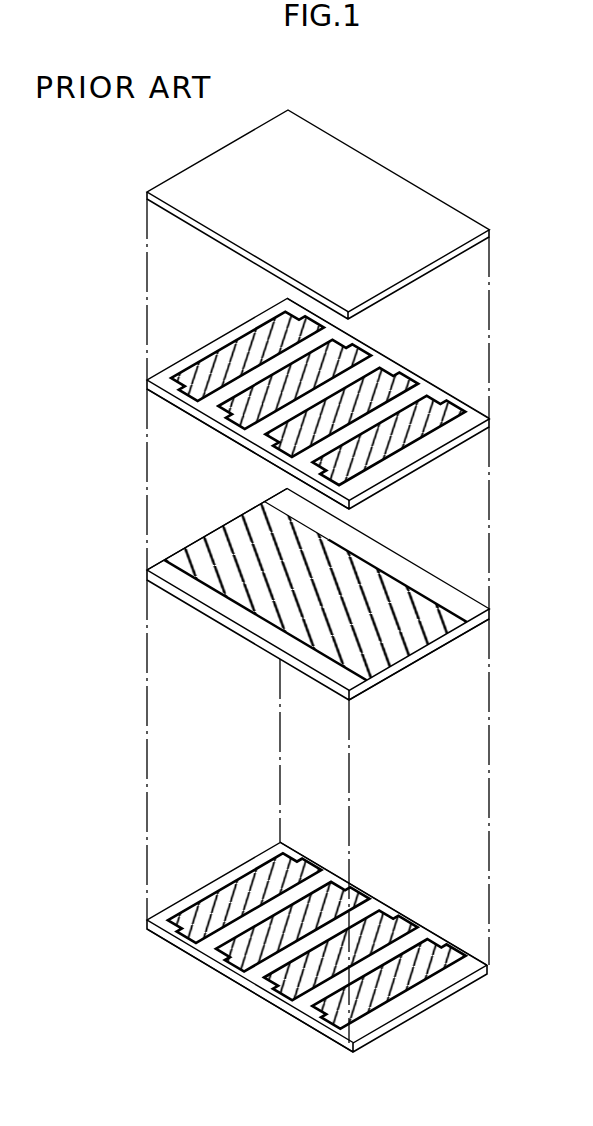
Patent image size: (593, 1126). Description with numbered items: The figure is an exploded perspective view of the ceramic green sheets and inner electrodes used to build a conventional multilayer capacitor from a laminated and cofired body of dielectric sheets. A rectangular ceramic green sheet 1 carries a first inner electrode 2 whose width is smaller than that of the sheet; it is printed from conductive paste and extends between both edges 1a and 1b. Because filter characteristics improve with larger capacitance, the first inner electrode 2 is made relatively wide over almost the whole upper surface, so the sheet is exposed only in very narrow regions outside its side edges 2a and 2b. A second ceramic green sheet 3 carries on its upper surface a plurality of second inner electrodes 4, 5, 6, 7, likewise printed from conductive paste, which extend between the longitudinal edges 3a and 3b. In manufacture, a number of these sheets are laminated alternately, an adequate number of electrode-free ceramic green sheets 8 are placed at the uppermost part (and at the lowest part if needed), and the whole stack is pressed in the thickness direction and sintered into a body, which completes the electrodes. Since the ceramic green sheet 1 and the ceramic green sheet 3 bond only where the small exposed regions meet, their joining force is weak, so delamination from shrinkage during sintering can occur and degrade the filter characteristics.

The ceramic green sheet 1 is at (411, 558).
The edge of ceramic green sheet 1a is at (477, 622).
The edge of ceramic green sheet 1b is at (273, 498).
The first inner electrode 2 is at (407, 651).
The side edge of first inner electrode 2a is at (265, 621).
The side edge of first inner electrode 2b is at (342, 547).
The ceramic green sheet 3 is at (440, 458).
The longitudinal edge of ceramic green sheet 3a is at (202, 421).
The longitudinal edge of ceramic green sheet 3b is at (392, 361).
The second inner electrode 4 is at (227, 353).
The second inner electrode 5 is at (293, 373).
The second inner electrode 6 is at (270, 445).
The second inner electrode 7 is at (408, 442).
The ceramic green sheet 8 is at (458, 211).